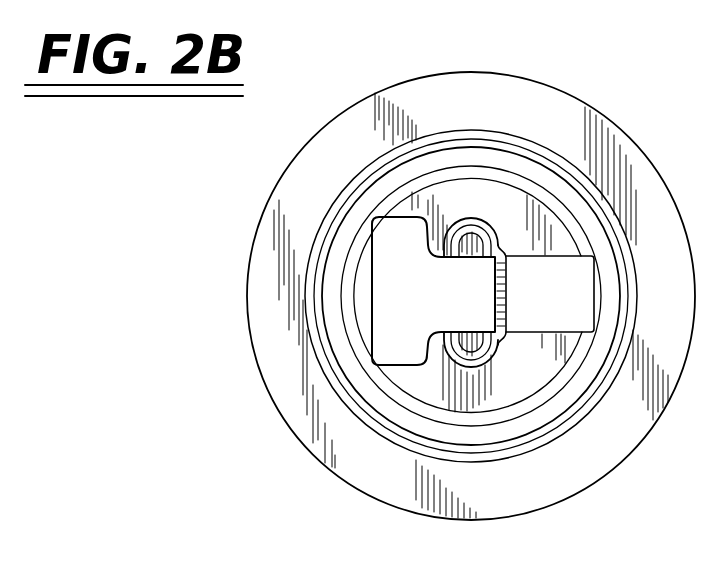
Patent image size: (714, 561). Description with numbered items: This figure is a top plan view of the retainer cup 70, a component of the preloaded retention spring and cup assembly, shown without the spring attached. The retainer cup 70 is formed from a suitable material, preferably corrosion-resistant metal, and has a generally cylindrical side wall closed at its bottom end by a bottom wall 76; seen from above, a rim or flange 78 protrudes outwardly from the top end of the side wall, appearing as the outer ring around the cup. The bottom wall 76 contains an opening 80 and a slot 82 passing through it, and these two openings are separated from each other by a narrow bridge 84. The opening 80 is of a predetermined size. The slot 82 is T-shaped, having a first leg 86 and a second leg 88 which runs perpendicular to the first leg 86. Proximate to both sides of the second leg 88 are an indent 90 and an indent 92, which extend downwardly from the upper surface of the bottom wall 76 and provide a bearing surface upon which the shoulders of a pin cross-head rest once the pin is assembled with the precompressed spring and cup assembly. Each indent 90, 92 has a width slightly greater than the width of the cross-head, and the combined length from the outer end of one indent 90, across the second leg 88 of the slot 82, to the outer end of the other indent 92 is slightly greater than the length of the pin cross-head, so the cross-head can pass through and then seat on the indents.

The retainer cup 70 is at (621, 111).
The bottom wall 76 is at (423, 378).
The rim or flange 78 is at (288, 351).
The opening 80 is at (537, 333).
The slot 82 is at (381, 257).
The narrow bridge 84 is at (508, 278).
The first leg 86 is at (378, 327).
The second leg 88 is at (441, 257).
The indent 90 is at (488, 245).
The indent 92 is at (477, 356).